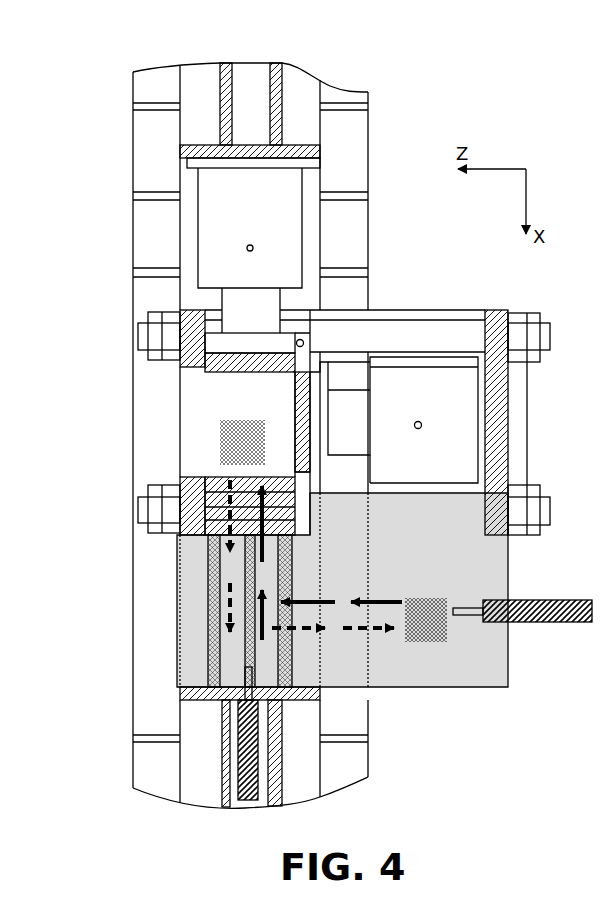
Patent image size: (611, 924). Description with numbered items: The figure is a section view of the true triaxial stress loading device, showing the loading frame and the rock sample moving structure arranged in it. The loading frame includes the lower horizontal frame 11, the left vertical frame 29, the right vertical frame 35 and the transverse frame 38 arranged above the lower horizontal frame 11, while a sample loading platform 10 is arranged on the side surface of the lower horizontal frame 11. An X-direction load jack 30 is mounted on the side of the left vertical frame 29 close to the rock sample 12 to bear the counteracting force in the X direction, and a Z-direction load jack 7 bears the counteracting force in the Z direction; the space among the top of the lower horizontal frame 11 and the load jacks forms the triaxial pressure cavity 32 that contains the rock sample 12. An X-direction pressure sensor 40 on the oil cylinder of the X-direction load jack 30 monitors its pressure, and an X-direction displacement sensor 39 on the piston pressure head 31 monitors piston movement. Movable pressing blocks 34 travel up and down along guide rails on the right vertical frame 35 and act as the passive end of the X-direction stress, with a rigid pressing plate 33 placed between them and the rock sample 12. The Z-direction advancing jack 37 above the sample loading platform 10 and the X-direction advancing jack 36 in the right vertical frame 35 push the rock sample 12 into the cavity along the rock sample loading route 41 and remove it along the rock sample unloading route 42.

The Z-direction load jack 7 is at (392, 398).
The sample loading platform 10 is at (468, 663).
The lower horizontal frame 11 is at (160, 265).
The rock sample 12 is at (432, 623).
The left vertical frame 29 is at (227, 83).
The X-direction load jack 30 is at (213, 223).
The piston pressure head 31 is at (232, 350).
The triaxial pressure cavity 32 is at (208, 425).
The rigid pressing plate 33 is at (213, 500).
The movable pressing blocks 34 is at (213, 602).
The right vertical frame 35 is at (227, 715).
The X-direction advancing jack 36 is at (242, 783).
The Z-direction advancing jack 37 is at (512, 602).
The transverse frame 38 is at (518, 468).
The X-direction displacement sensor 39 is at (300, 343).
The X-direction pressure sensor 40 is at (250, 248).
The rock sample loading route 41 is at (302, 602).
The rock sample unloading route 42 is at (308, 630).